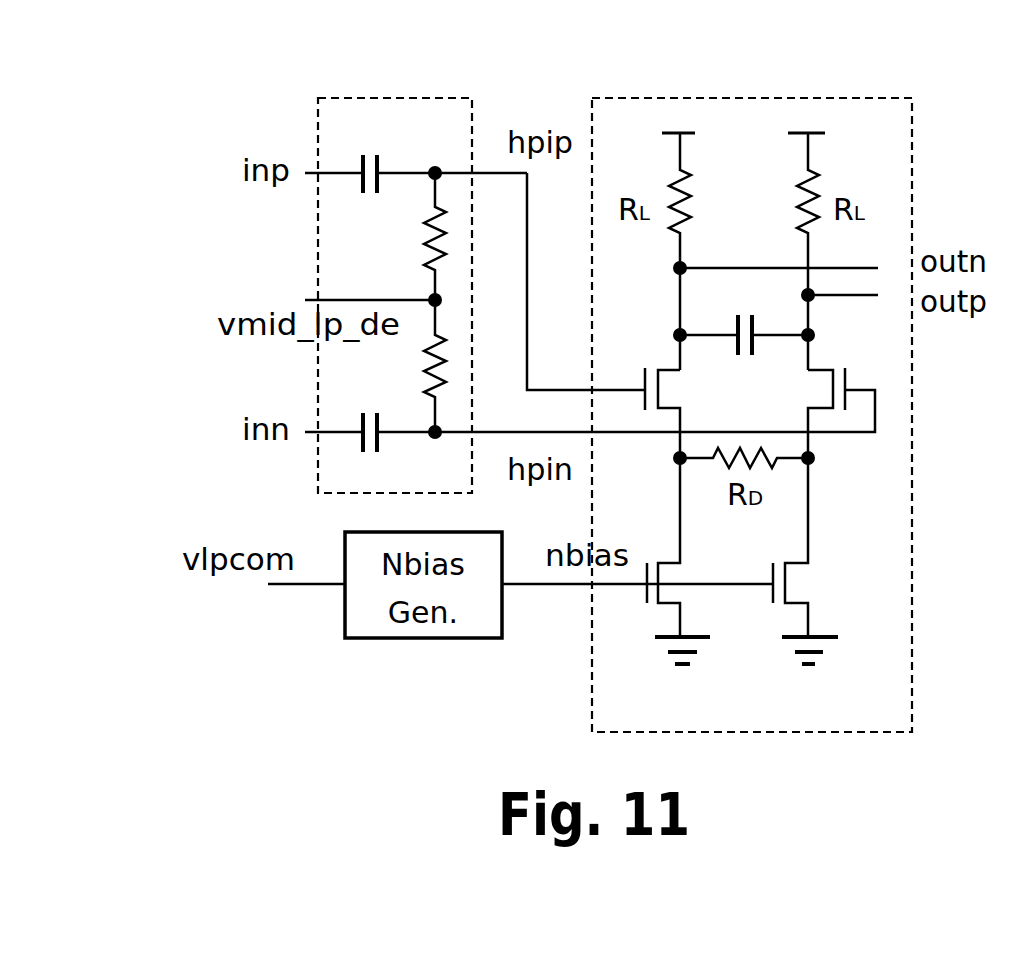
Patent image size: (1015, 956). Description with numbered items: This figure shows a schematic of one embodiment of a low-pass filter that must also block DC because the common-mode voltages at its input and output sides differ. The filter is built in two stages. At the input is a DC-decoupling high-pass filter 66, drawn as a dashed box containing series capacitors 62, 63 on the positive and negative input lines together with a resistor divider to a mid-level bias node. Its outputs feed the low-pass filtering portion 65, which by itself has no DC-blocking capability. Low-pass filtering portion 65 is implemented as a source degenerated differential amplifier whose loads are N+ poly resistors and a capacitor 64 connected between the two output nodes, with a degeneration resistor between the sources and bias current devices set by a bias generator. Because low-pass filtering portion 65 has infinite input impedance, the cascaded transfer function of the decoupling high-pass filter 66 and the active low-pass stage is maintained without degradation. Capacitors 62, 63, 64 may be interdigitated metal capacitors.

The capacitor 62 is at (368, 120).
The capacitor 63 is at (348, 452).
The capacitor 64 is at (830, 343).
The low-pass filtering portion 65 is at (742, 88).
The DC-decoupling high-pass filter 66 is at (340, 88).